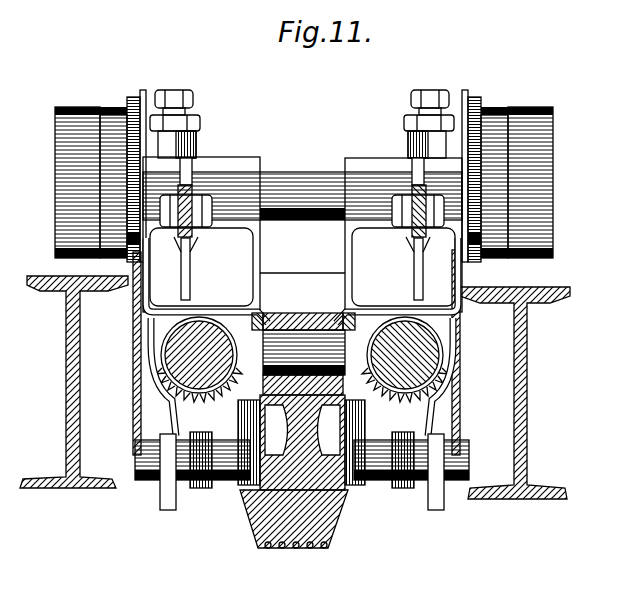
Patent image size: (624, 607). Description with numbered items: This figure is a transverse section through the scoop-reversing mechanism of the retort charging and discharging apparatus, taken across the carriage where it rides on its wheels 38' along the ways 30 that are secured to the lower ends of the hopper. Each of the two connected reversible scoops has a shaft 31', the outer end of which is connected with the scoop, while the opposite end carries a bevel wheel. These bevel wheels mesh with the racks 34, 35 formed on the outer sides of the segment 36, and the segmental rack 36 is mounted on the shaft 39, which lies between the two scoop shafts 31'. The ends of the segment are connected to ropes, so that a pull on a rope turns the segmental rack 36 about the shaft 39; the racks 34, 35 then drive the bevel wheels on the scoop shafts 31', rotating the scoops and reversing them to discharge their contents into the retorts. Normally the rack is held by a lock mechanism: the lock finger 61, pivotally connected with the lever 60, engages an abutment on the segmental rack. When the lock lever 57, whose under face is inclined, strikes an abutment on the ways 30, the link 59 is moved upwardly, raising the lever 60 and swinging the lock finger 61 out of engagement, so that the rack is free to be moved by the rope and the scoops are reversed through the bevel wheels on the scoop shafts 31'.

The ways 30 is at (68, 429).
The shaft 31' is at (293, 359).
The rack 34 is at (246, 527).
The rack 35 is at (348, 519).
The segment 36 is at (292, 548).
The wheels 38' is at (304, 164).
The shaft 39 is at (297, 336).
The lock lever 57 is at (161, 496).
The link 59 is at (191, 284).
The lever 60 is at (196, 170).
The lock finger 61 is at (253, 273).